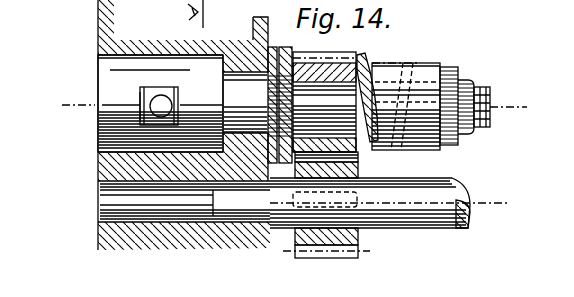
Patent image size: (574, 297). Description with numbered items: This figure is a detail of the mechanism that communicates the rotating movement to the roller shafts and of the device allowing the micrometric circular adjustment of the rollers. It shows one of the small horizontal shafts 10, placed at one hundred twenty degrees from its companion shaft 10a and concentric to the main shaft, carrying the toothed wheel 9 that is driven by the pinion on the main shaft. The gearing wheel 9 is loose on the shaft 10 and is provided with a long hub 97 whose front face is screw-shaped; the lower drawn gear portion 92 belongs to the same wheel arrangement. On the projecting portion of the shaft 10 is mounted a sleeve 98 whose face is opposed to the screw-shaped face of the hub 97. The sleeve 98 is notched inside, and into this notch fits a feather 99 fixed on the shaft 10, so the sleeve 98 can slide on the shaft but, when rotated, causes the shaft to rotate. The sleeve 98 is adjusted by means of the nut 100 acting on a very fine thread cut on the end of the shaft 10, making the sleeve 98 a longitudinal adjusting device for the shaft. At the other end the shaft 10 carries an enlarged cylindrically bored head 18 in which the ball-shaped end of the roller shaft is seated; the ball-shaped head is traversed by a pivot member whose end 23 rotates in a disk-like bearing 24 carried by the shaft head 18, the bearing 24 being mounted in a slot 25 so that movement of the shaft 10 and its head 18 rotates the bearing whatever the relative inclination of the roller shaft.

The toothed wheel 9 is at (340, 62).
The gear 92 is at (358, 239).
The small shaft 10 is at (490, 100).
The small shaft 10a is at (447, 195).
The cylindrically bored head 18 is at (160, 103).
The pivot member end 23 is at (145, 126).
The disk-like bearing 24 is at (98, 141).
The slot 25 is at (140, 97).
The hub 97 is at (372, 140).
The sleeve 98 is at (421, 66).
The feather 99 is at (462, 137).
The nut 100 is at (460, 74).